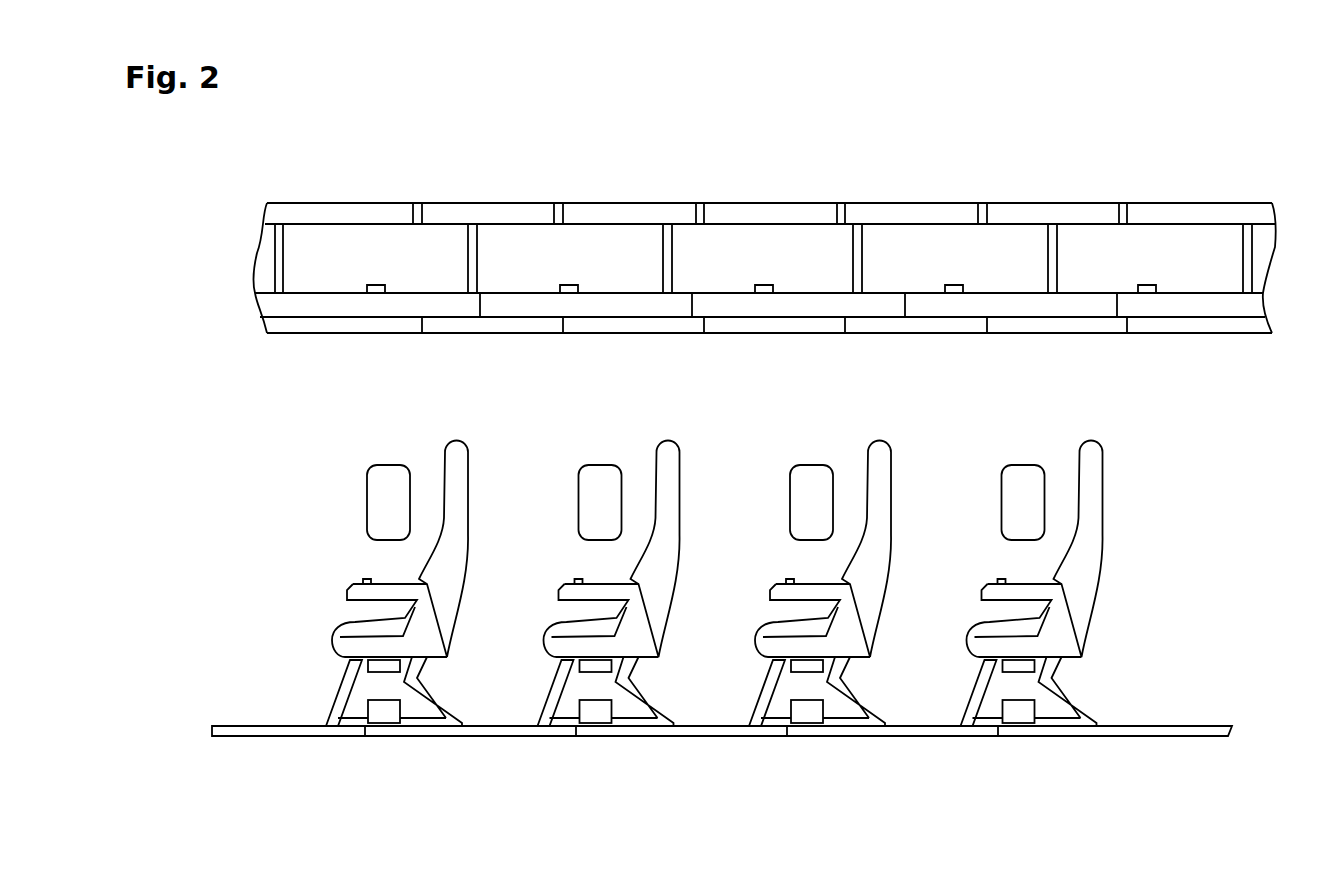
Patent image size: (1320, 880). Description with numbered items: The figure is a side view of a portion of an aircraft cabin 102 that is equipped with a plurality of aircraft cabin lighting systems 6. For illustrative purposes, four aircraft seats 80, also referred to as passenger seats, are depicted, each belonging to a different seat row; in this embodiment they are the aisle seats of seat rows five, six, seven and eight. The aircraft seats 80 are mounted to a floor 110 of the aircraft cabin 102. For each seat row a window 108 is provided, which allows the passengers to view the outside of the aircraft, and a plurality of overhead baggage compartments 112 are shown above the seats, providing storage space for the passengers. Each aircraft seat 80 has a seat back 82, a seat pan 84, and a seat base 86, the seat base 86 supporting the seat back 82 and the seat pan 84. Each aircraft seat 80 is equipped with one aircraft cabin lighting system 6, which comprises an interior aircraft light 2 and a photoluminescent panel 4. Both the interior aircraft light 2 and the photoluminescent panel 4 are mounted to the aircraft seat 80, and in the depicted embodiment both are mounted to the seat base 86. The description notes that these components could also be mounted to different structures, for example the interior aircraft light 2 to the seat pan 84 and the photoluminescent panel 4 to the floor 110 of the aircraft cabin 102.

The interior aircraft light 2 is at (375, 667).
The photoluminescent panel 4 is at (368, 708).
The aircraft cabin lighting system 6 is at (292, 725).
The aircraft seat 80 is at (465, 422).
The seat back 82 is at (453, 547).
The seat pan 84 is at (341, 627).
The seat base 86 is at (437, 697).
The aircraft cabin 102 is at (254, 587).
The window 108 is at (375, 487).
The floor 110 is at (1183, 725).
The overhead baggage compartment 112 is at (405, 245).